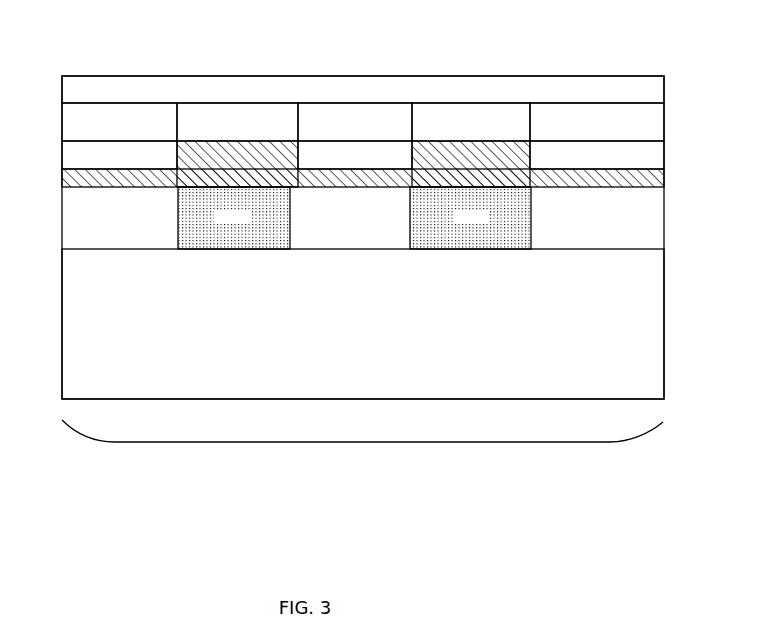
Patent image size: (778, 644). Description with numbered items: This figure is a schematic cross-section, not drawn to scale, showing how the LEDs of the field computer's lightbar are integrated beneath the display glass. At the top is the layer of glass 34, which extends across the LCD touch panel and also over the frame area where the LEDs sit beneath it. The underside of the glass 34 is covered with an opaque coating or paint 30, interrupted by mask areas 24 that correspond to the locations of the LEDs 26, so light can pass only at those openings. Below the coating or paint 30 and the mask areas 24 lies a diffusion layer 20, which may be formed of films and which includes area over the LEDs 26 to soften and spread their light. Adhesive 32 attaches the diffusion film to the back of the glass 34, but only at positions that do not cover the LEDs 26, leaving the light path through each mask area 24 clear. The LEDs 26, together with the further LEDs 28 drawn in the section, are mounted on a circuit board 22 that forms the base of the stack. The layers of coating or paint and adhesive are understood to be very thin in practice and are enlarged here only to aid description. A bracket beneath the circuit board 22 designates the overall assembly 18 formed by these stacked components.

The illuminated panel assembly 18 is at (362, 442).
The diffusion layer 20 is at (642, 198).
The circuit board 22 is at (355, 340).
The mask areas 24 is at (277, 118).
The LEDs 26 is at (200, 250).
The LED 28 is at (490, 240).
The opaque coating or paint 30 is at (168, 115).
The adhesive 32 is at (118, 157).
The layer of glass 34 is at (210, 85).